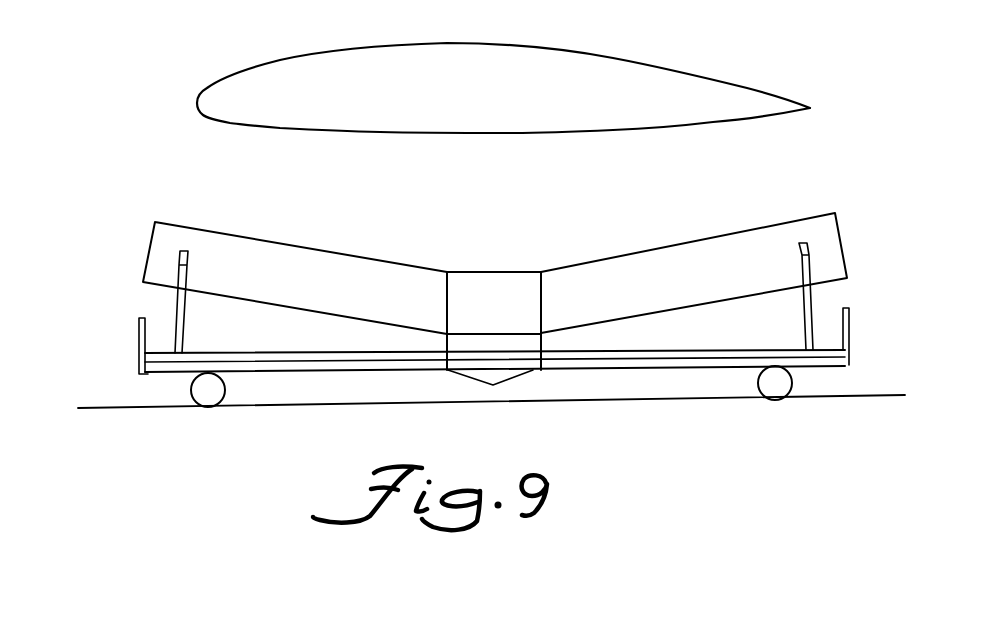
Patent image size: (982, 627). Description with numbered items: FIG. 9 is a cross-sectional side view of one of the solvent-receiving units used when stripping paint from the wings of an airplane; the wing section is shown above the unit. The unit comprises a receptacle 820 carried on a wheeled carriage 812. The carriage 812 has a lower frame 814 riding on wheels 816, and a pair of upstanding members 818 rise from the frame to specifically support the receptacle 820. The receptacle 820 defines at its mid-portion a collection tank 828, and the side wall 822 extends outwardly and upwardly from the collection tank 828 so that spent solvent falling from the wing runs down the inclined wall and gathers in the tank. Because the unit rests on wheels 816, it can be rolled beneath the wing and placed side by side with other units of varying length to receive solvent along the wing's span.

The carriage 812 is at (133, 378).
The lower frame 814 is at (406, 374).
The wheels 816 is at (226, 393).
The upstanding members 818 is at (185, 322).
The receptacle 820 is at (253, 200).
The side wall 822 is at (365, 230).
The collection tank 828 is at (518, 243).